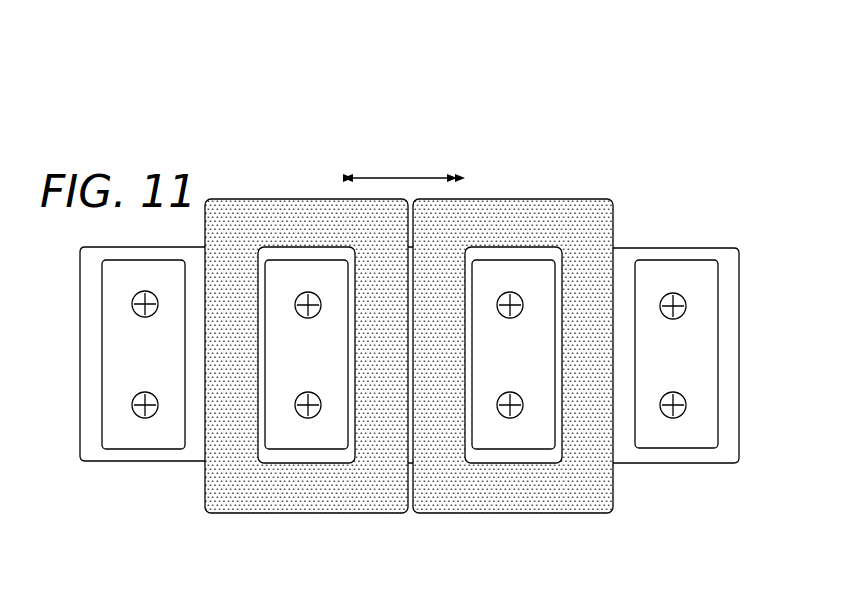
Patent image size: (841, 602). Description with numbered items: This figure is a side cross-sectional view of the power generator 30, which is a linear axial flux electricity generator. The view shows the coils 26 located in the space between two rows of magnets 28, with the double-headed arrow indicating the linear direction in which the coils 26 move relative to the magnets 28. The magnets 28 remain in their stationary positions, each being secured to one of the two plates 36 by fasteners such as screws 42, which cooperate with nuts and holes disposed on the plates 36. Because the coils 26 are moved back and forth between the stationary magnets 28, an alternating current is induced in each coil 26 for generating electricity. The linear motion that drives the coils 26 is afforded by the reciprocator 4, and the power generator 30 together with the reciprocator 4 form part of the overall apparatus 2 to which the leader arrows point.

The battery module assembly 2 is at (518, 72).
The reciprocator 4 is at (600, 103).
The power generator 30 is at (647, 142).
The coil 26 is at (309, 199).
The magnet 28 is at (140, 356).
The plate 36 is at (672, 248).
The screw 42 is at (165, 289).